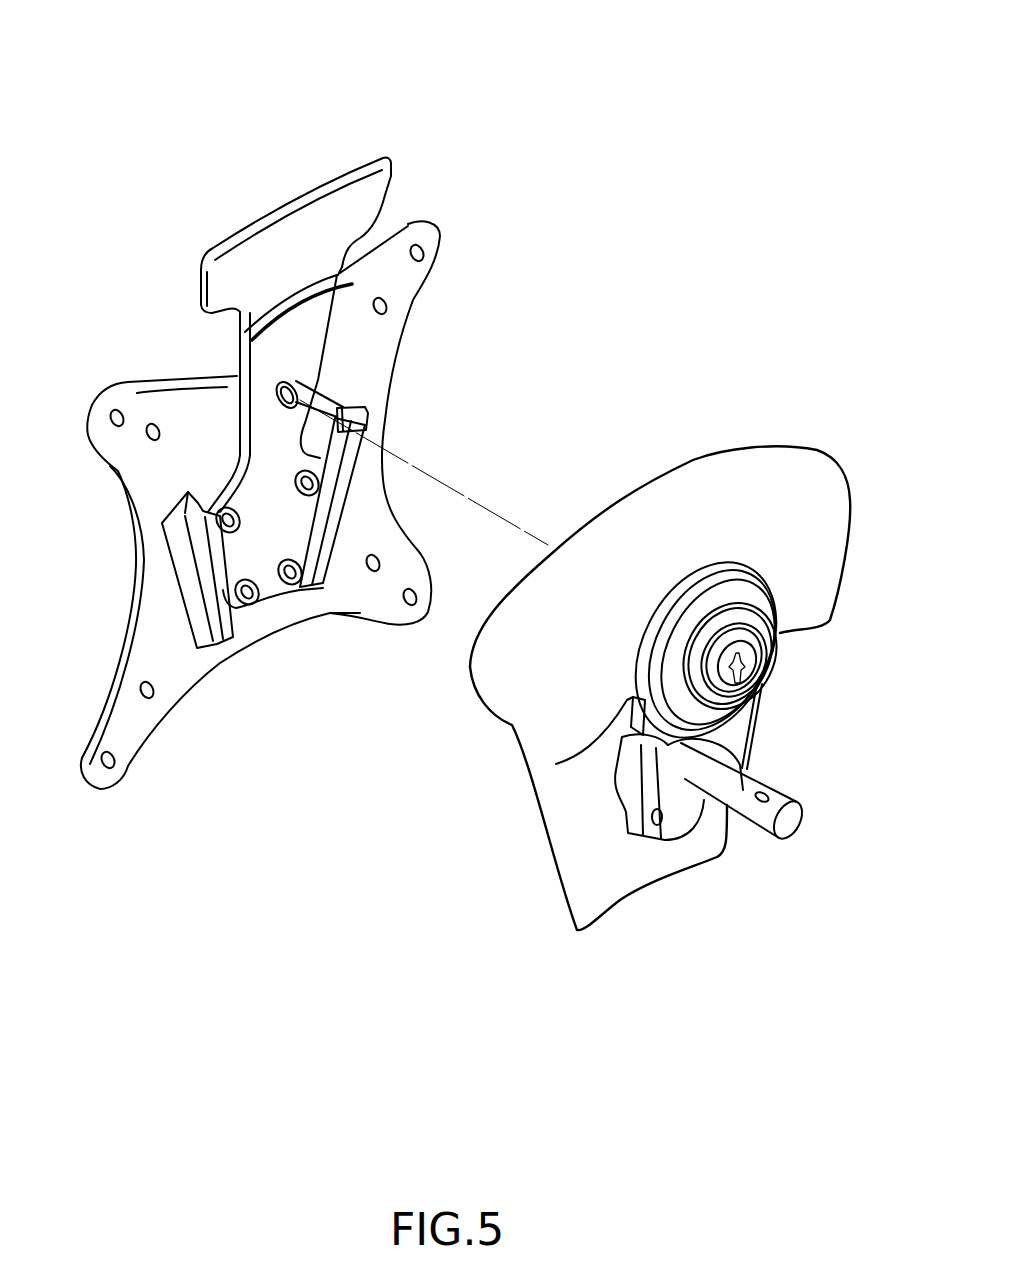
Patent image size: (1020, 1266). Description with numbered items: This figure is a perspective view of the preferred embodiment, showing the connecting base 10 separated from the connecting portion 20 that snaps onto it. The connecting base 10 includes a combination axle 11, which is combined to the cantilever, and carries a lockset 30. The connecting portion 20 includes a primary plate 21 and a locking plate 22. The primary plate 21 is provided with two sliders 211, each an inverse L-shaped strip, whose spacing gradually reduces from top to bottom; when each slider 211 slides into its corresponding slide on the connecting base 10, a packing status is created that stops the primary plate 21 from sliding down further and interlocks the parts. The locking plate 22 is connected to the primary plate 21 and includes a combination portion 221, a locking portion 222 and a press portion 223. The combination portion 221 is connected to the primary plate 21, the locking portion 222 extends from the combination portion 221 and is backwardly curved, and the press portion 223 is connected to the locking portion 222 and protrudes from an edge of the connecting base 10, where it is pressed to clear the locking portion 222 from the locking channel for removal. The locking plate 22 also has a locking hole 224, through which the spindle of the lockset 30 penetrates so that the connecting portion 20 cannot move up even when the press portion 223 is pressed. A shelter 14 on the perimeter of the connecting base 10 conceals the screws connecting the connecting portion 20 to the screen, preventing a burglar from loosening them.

The connecting base 10 is at (775, 397).
The combination axle 11 is at (747, 807).
The shelter 14 is at (810, 530).
The connecting portion 20 is at (432, 135).
The primary plate 21 is at (137, 420).
The locking plate 22 is at (313, 357).
The combination portion 221 is at (262, 532).
The locking portion 222 is at (413, 224).
The press portion 223 is at (300, 235).
The locking hole 224 is at (365, 414).
The slider 211 is at (218, 662).
The lockset 30 is at (735, 675).